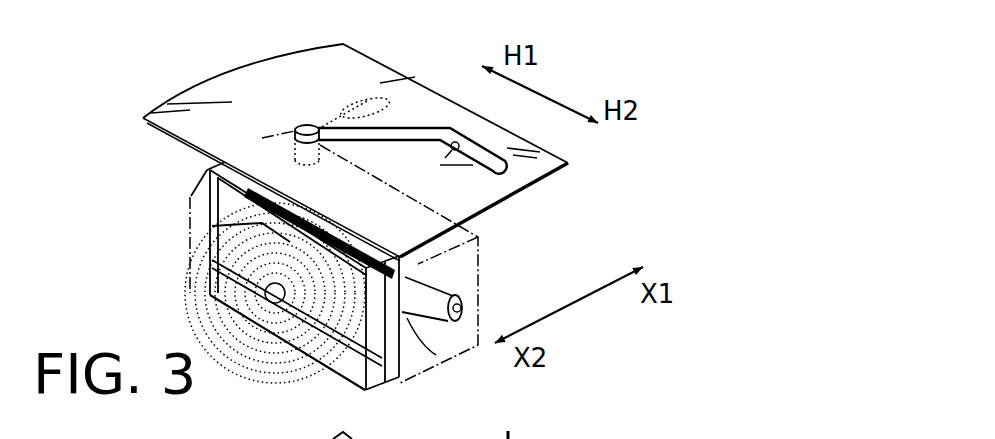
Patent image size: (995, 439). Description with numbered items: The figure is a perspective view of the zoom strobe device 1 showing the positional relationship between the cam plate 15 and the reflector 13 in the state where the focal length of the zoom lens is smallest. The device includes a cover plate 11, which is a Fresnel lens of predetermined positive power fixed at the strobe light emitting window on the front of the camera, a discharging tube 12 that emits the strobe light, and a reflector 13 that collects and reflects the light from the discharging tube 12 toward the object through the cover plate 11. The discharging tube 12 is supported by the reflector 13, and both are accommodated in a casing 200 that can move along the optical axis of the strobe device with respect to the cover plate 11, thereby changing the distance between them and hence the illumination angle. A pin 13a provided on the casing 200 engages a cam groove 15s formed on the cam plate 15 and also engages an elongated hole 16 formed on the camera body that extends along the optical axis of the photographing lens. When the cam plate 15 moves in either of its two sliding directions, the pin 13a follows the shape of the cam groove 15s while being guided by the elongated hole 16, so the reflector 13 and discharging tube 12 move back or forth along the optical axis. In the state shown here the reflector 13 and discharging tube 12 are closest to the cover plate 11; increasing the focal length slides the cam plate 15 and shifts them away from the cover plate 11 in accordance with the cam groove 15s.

The zoom strobe device 1 is at (428, 64).
The cover plate 11 is at (205, 185).
The discharging tube 12 is at (436, 355).
The reflector 13 is at (330, 232).
The pin 13a is at (302, 125).
The cam plate 15 is at (500, 187).
The cam groove 15s is at (453, 151).
The elongated hole 16 is at (352, 106).
The casing 200 is at (480, 275).